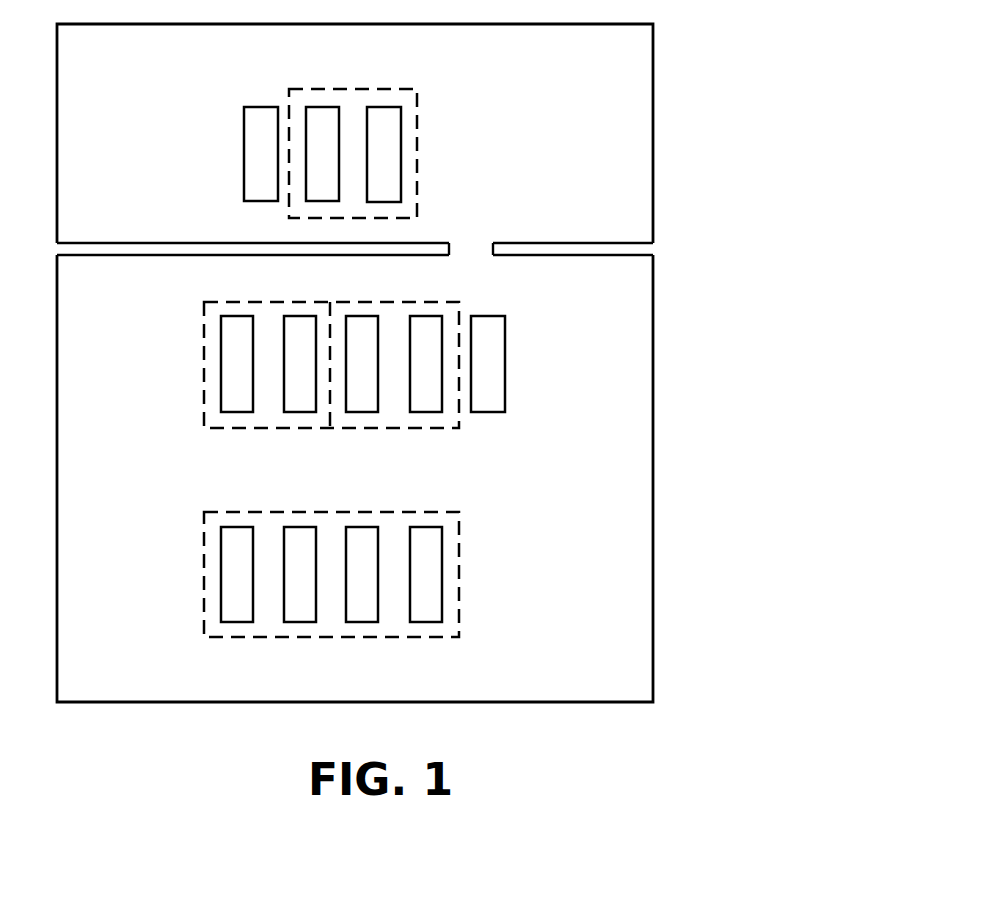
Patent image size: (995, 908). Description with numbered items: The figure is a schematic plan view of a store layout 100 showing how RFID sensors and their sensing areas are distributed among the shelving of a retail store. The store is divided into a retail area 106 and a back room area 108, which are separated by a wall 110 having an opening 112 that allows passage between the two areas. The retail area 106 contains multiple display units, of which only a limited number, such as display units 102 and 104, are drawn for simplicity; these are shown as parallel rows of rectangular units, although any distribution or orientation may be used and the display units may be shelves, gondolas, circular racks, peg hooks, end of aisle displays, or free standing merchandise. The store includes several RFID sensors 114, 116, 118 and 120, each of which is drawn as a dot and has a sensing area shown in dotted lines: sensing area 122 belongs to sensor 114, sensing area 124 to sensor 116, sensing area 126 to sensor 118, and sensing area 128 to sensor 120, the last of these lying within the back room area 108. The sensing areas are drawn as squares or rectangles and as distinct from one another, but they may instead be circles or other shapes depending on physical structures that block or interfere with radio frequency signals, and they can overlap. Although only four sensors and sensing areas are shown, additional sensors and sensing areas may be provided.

The store layout 100 is at (445, 363).
The display unit 102 is at (235, 610).
The display unit 104 is at (293, 610).
The retail area 106 is at (587, 290).
The back room area 108 is at (595, 121).
The wall 110 is at (607, 243).
The opening 112 is at (473, 235).
The RFID sensor 114 is at (332, 575).
The RFID sensor 116 is at (267, 368).
The RFID sensor 118 is at (395, 368).
The RFID sensor 120 is at (352, 155).
The sensing area 122 is at (448, 637).
The sensing area 124 is at (202, 413).
The sensing area 126 is at (447, 428).
The sensing area 128 is at (418, 192).